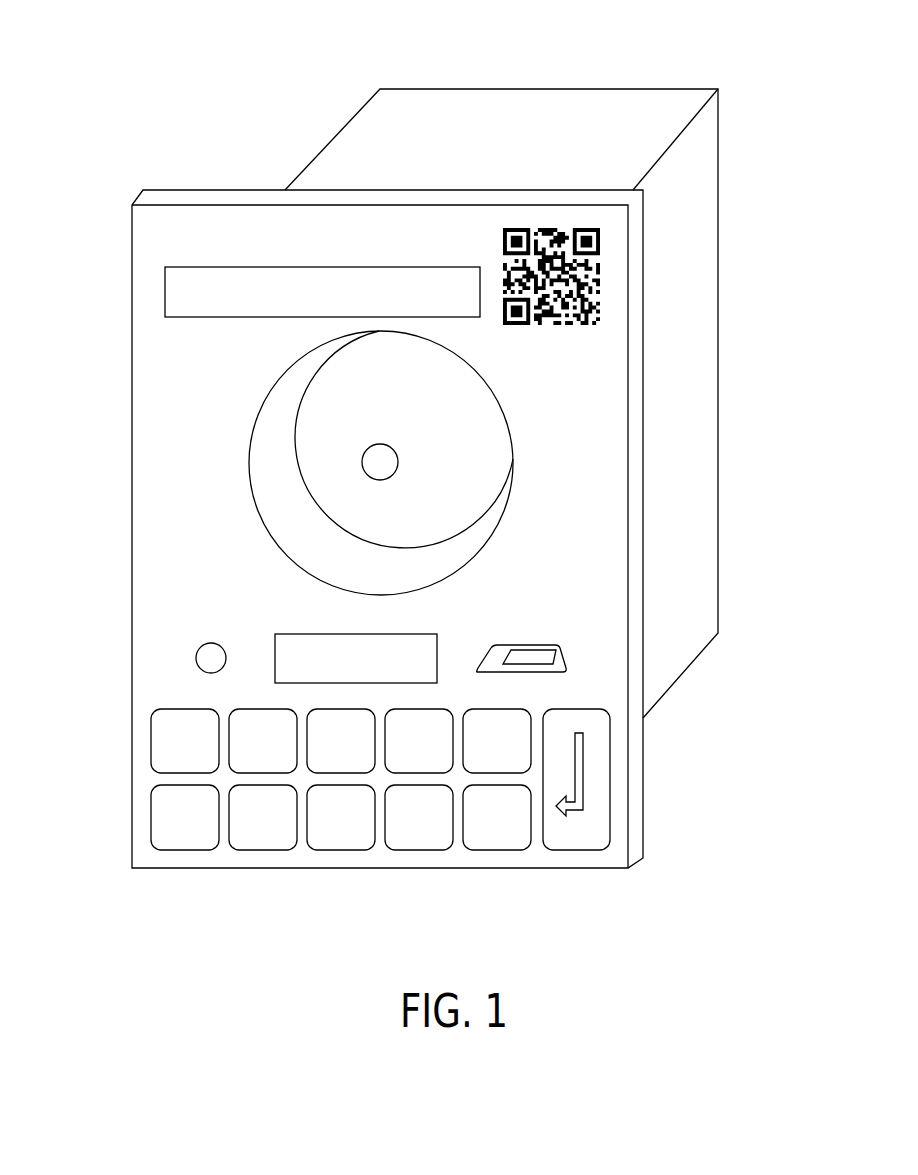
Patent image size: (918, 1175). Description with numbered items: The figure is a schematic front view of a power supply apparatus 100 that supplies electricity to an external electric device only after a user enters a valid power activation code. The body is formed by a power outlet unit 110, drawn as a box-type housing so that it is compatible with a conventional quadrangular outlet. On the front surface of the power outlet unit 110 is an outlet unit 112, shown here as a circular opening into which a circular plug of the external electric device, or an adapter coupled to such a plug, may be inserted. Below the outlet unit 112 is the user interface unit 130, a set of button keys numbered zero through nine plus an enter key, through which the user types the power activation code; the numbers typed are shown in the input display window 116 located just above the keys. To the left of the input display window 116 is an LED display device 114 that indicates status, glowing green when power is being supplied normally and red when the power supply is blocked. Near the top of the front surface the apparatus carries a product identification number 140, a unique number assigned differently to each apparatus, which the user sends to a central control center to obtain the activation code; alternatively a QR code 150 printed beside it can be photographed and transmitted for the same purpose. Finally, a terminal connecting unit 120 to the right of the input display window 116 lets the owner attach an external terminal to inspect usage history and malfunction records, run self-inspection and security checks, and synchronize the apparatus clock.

The power supply apparatus 100 is at (512, 28).
The power outlet unit 110 is at (693, 343).
The outlet unit 112 is at (463, 465).
The LED display device 114 is at (196, 657).
The input display window 116 is at (410, 632).
The terminal connecting unit 120 is at (540, 666).
The user interface unit 130 is at (342, 850).
The product identification number 140 is at (165, 292).
The QR code 150 is at (600, 263).